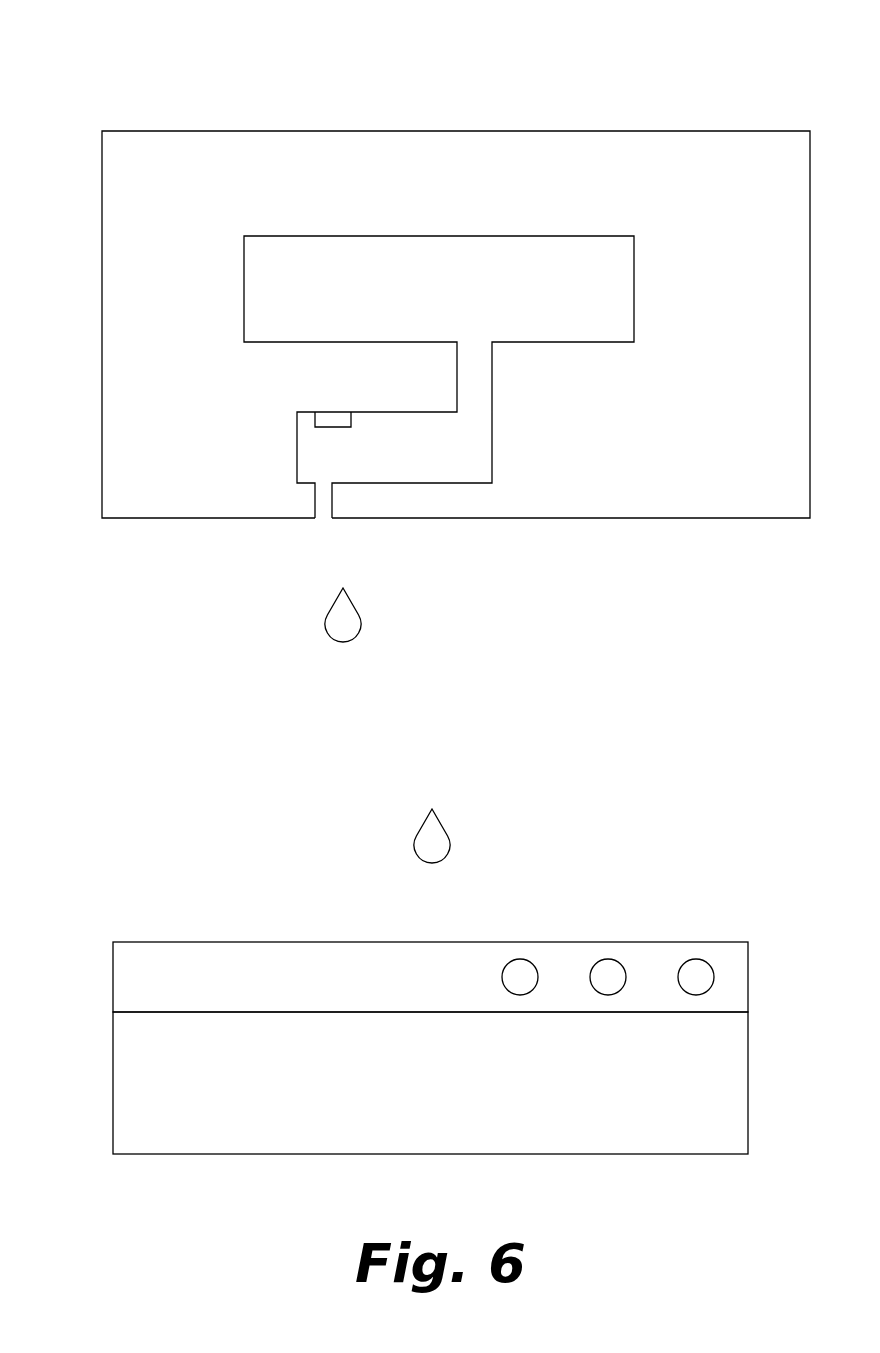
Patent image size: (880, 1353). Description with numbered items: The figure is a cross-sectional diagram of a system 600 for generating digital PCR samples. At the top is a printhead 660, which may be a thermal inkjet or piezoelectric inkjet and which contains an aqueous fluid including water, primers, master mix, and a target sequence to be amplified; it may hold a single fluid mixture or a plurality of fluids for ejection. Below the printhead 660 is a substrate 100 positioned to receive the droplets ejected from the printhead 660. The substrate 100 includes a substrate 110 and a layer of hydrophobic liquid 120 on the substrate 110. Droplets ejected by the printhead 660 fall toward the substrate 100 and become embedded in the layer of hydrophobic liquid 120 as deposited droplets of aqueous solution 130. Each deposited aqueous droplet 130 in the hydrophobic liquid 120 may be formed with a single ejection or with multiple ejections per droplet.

The system for generating dPCR samples 600 is at (456, 263).
The printhead 660 is at (456, 324).
The substrate 100 is at (404, 999).
The layer of hydrophobic liquid 120 is at (430, 977).
The substrate 110 is at (430, 1083).
The deposited droplets of aqueous solution 130 is at (527, 969).